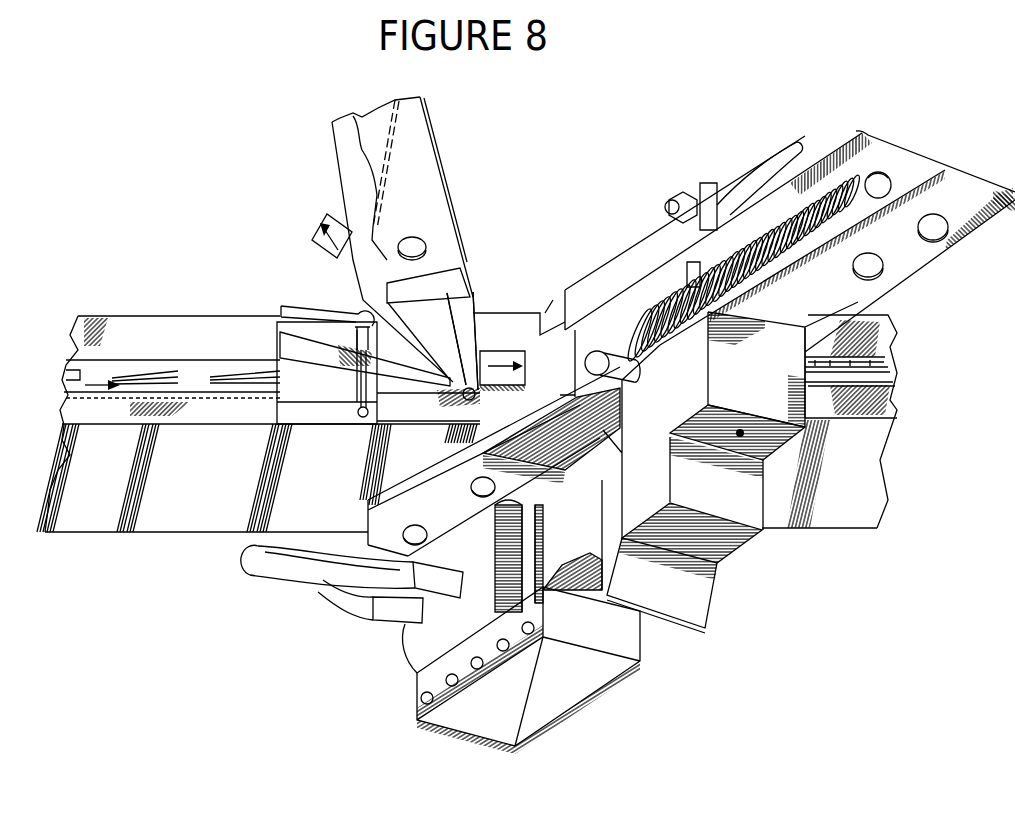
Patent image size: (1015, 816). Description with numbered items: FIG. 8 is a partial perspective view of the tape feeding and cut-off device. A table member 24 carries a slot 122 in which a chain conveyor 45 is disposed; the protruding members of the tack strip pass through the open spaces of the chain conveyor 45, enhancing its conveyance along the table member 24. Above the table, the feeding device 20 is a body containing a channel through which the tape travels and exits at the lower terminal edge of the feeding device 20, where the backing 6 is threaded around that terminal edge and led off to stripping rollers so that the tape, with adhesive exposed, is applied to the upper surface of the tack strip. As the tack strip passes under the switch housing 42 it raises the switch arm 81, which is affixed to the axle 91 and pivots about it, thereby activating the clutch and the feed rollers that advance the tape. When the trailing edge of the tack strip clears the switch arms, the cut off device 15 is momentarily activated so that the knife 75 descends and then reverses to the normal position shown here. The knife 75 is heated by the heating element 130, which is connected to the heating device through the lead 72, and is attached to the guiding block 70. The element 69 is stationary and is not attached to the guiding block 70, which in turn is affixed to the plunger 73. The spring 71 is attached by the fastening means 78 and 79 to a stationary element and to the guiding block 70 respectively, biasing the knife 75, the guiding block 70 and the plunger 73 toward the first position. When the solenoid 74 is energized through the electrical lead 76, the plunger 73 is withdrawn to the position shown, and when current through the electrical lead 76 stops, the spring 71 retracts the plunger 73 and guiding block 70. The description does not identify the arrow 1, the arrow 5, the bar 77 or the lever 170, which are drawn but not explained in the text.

The direction arrow of strip feed 1 is at (68, 370).
The direction arrow / cutting block 5 is at (500, 350).
The backing 6 is at (322, 228).
The cut off device 15 is at (703, 168).
The feeding device 20 is at (434, 104).
The table member 24 is at (198, 347).
The switch housing 42 is at (291, 395).
The chain conveyor 45 is at (880, 368).
The element 69 is at (975, 170).
The guiding block 70 is at (738, 372).
The spring 71 is at (826, 195).
The lead 72 is at (775, 141).
The plunger 73 is at (564, 537).
The solenoid 74 is at (575, 638).
The knife 75 is at (548, 318).
The electrical lead 76 is at (292, 572).
The channel bar 77 is at (366, 506).
The fastening means 78 is at (884, 170).
The fastening means 79 is at (600, 350).
The switch arm 81 is at (292, 305).
The axle 91 is at (358, 418).
The slot 122 is at (870, 384).
The heating element 130 is at (607, 274).
The lever arm 170 is at (468, 312).